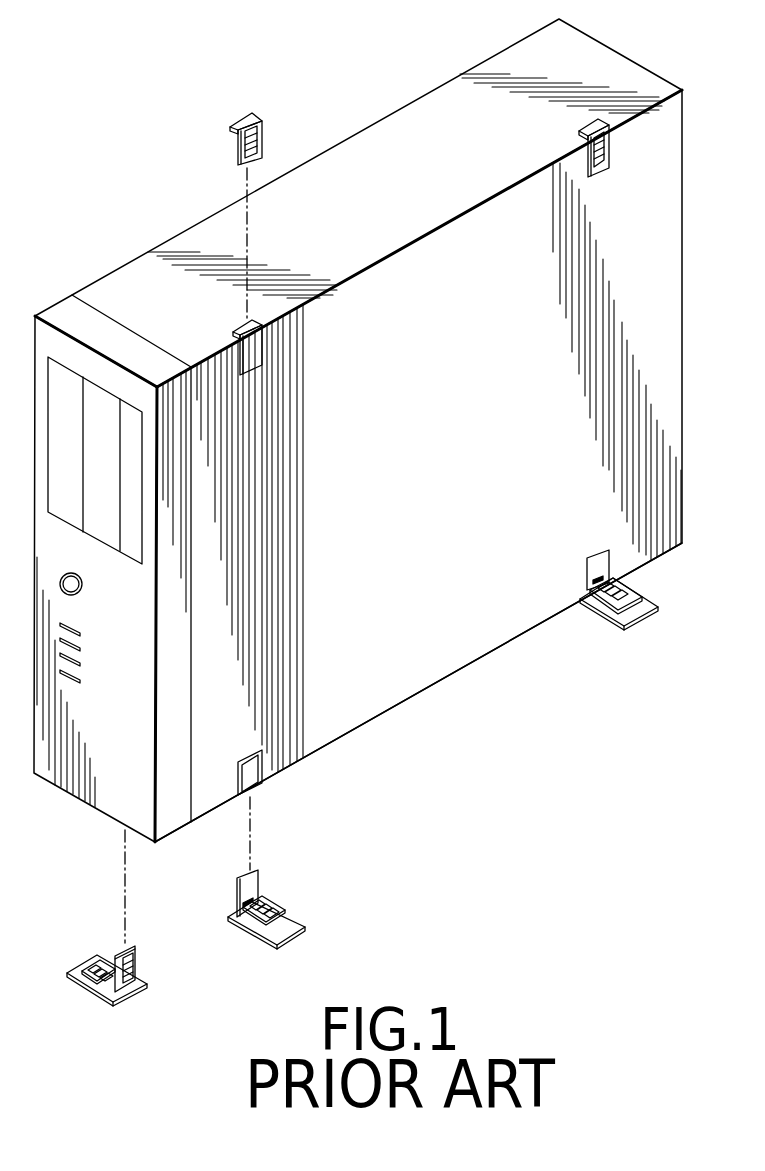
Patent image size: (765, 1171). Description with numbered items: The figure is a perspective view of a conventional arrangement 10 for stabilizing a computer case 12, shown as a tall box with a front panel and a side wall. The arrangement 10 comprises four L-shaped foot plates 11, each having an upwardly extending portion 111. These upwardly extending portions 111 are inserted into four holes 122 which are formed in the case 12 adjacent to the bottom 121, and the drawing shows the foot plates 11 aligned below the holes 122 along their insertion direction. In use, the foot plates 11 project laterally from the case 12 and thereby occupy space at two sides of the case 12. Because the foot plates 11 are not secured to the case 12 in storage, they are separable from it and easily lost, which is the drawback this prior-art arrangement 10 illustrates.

The conventional arrangement 10 is at (358, 448).
The L-shaped foot plate 11 is at (362, 812).
The computer case 12 is at (552, 603).
The upwardly extending portion 111 is at (141, 962).
The bottom 121 is at (377, 718).
The hole 122 is at (263, 777).